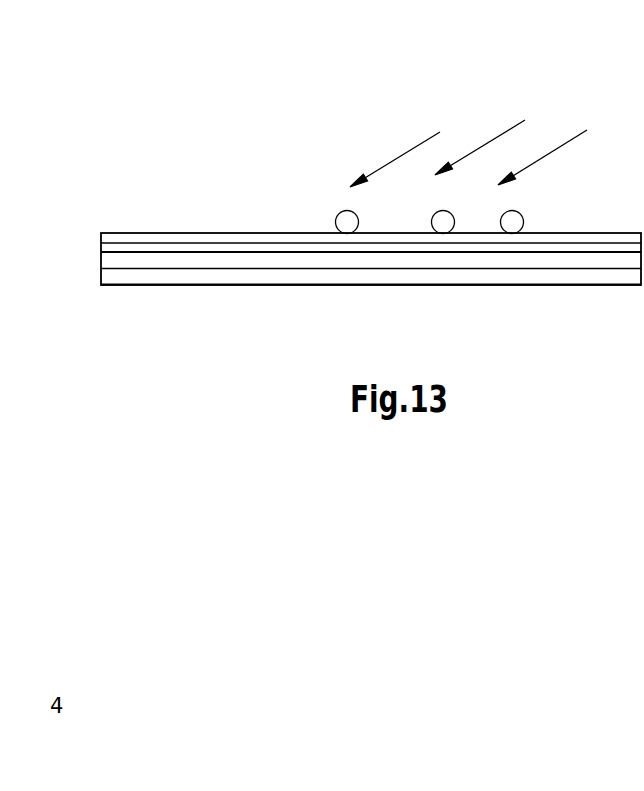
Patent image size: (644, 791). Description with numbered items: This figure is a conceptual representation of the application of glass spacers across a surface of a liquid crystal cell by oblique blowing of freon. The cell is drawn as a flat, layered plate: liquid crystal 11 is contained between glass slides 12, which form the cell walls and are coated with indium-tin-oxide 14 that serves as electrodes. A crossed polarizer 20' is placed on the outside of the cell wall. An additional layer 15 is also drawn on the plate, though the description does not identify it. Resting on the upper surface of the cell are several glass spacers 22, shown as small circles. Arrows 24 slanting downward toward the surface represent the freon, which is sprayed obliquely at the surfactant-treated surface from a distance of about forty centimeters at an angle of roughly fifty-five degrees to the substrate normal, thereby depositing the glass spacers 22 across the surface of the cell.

The liquid crystal 11 is at (568, 245).
The glass slide 12 is at (278, 260).
The indium-tin-oxide coating 14 is at (163, 243).
The top layer 15 is at (125, 234).
The crossed polarizer 20' is at (371, 311).
The glass spacer 22 is at (517, 221).
The arrows representing oblique blowing of freon 24 is at (505, 130).